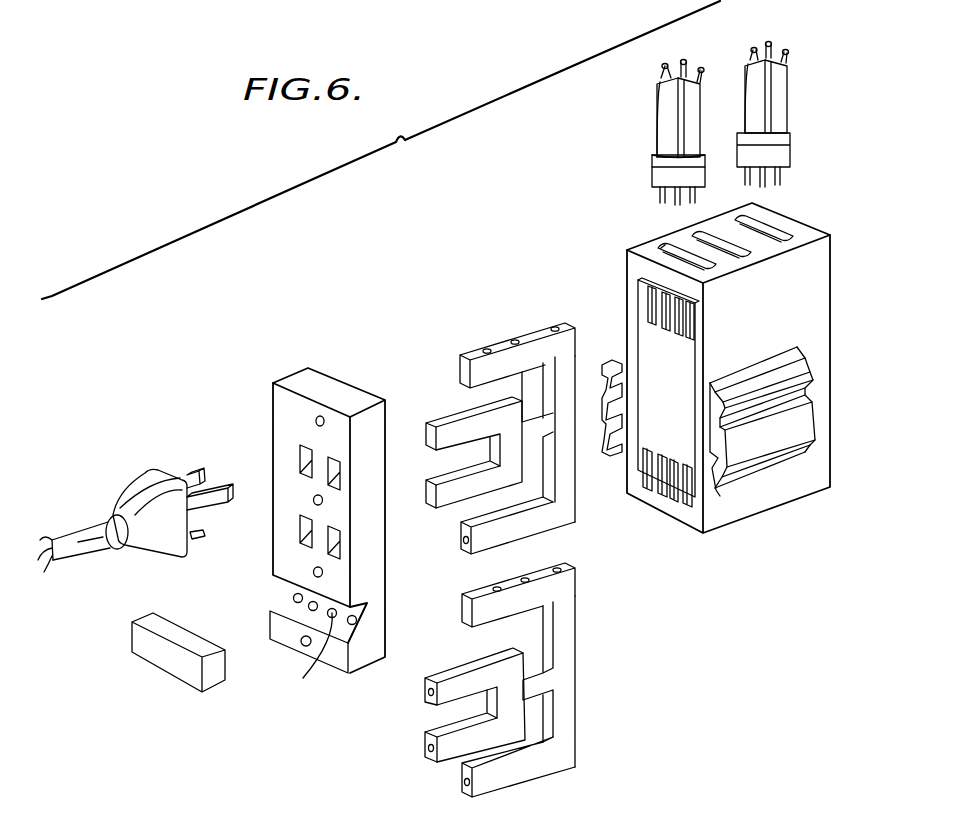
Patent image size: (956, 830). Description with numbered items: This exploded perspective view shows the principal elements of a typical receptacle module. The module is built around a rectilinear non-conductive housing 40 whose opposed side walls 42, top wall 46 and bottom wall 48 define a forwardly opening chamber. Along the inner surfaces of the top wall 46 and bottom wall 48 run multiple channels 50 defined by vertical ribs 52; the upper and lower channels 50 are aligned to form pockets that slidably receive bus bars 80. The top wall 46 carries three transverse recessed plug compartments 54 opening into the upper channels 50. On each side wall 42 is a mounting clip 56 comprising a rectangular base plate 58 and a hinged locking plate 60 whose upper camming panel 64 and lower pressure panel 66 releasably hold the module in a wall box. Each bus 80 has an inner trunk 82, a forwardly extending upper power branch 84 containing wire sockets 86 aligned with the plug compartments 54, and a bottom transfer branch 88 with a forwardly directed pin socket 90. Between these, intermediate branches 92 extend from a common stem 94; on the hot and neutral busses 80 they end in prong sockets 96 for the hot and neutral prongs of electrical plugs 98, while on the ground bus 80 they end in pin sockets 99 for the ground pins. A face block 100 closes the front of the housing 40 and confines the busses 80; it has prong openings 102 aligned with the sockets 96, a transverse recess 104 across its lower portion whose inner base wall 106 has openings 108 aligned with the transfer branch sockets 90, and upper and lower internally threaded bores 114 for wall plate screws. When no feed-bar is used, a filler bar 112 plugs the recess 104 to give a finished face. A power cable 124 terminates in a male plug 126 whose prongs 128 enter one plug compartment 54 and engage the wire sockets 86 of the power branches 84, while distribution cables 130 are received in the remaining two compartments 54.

The housing 40 is at (618, 266).
The side walls 42 is at (826, 283).
The top wall 46 is at (768, 250).
The bottom wall 48 is at (688, 518).
The channels 50 is at (688, 308).
The vertical ribs 52 is at (677, 448).
The plug compartments 54 is at (720, 237).
The mounting clips 56 is at (815, 345).
The base plate 58 is at (744, 517).
The locking plate 60 is at (796, 419).
The upper camming panel 64 is at (812, 391).
The lower pressure panel 66 is at (804, 466).
The bus bars 80 is at (514, 422).
The trunk 82 is at (527, 687).
The upper power branch 84 is at (498, 348).
The wire sockets 86 is at (553, 326).
The bottom transfer branch 88 is at (547, 521).
The pin socket 90 is at (462, 786).
The intermediate branches 92 is at (456, 457).
The common stem 94 is at (548, 405).
The prong socket 96 is at (436, 432).
The pin sockets 99 is at (428, 688).
The electrical plugs 98 is at (155, 545).
The face block 100 is at (303, 527).
The prong openings 102 is at (332, 456).
The transverse recess 104 is at (278, 596).
The inner base wall 106 is at (303, 678).
The openings 108 is at (318, 664).
The filler bar 112 is at (148, 647).
The internally threaded bores 114 is at (322, 417).
The power cable 124 is at (662, 100).
The male plug 126 is at (655, 170).
The prongs 128 is at (658, 188).
The distribution cables 130 is at (777, 112).